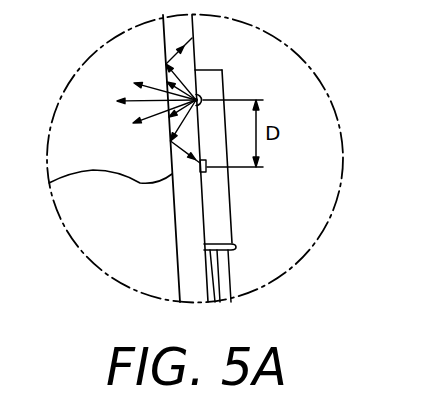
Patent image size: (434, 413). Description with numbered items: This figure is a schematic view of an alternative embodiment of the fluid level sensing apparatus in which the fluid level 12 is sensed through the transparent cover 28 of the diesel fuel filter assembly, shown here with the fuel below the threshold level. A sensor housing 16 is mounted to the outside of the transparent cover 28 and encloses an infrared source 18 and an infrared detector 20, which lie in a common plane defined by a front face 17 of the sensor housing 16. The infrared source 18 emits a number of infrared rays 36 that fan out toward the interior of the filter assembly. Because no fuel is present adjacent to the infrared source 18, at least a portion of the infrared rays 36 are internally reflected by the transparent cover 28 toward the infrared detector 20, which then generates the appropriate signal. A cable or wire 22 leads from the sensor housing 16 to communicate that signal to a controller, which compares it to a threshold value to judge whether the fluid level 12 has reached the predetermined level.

The fluid level 12 is at (105, 171).
The sensor housing 16 is at (230, 216).
The front face 17 is at (236, 244).
The infrared source 18 is at (204, 96).
The infrared detector 20 is at (207, 171).
The cable or wire 22 is at (229, 267).
The transparent cover 28 is at (190, 257).
The infrared rays 36 is at (141, 82).